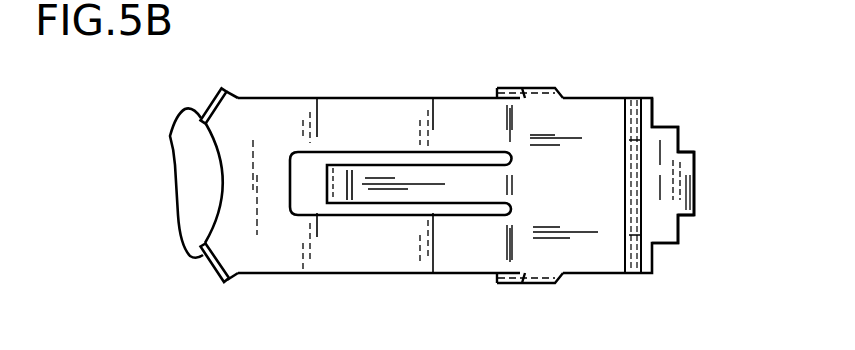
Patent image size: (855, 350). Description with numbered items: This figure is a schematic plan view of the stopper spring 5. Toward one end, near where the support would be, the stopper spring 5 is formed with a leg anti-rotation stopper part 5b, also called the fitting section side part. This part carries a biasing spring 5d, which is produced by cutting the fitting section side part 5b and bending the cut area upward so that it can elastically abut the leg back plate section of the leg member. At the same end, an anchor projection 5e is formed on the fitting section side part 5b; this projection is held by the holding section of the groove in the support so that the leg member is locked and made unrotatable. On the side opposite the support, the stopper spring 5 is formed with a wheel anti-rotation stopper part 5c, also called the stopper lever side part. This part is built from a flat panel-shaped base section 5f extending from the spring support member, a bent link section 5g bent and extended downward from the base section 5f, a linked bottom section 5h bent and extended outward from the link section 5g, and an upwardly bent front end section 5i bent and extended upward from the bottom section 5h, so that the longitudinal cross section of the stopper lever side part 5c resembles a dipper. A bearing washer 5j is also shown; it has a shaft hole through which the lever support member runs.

The stopper spring 5 is at (290, 96).
The leg anti-rotation stopper part 5b is at (333, 237).
The wheel anti-rotation stopper part 5c is at (660, 108).
The biasing spring 5d is at (378, 170).
The anchor projection 5e is at (171, 136).
The base section 5f is at (590, 243).
The link section 5g is at (633, 97).
The bottom section 5h is at (663, 222).
The front end section 5i is at (695, 193).
The bearing washer 5j is at (511, 88).